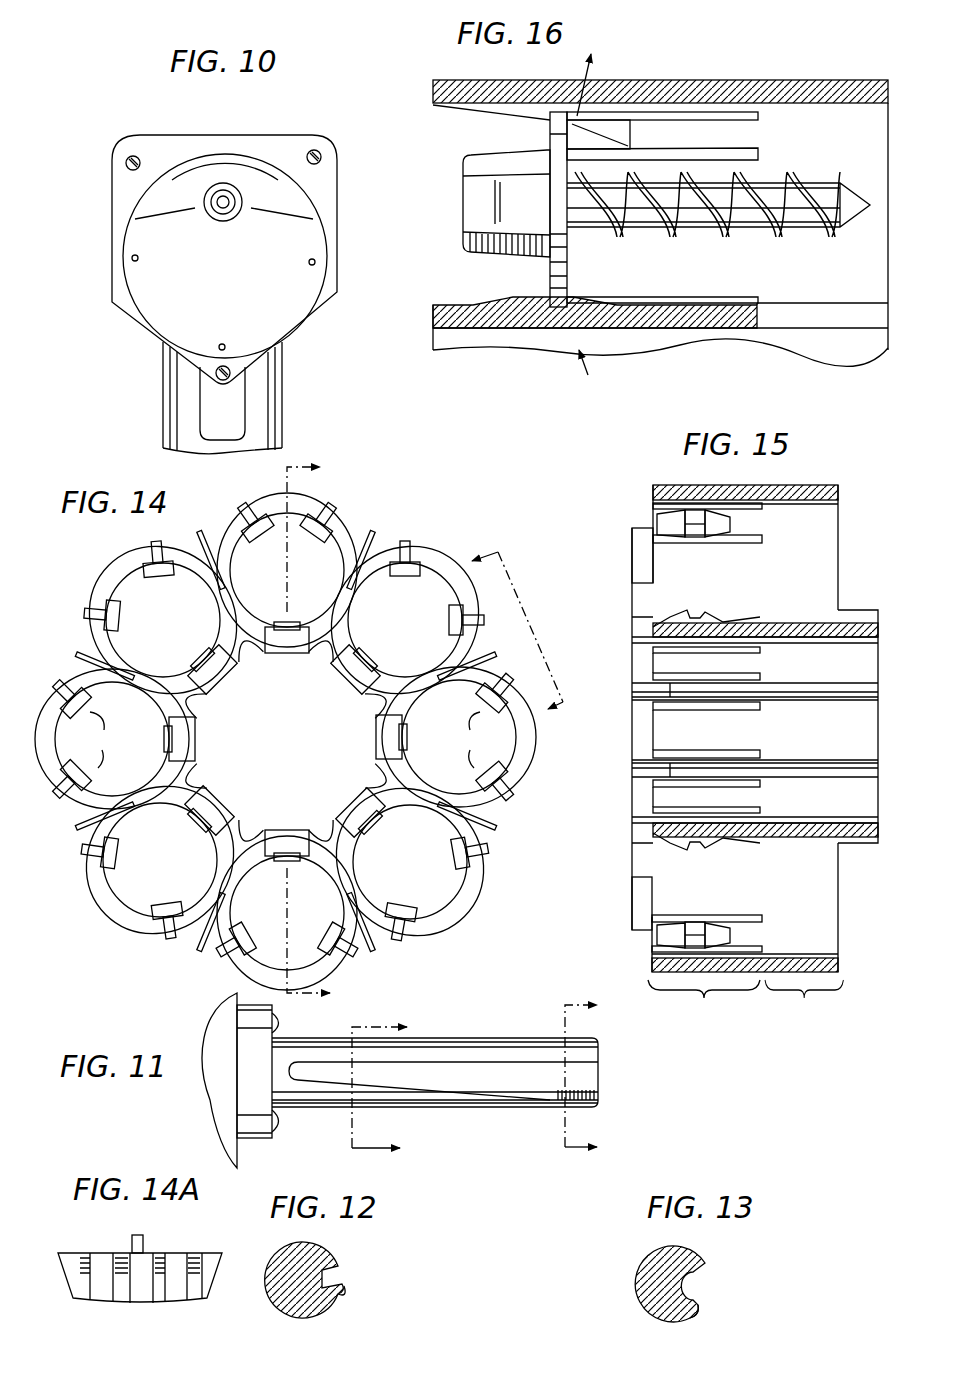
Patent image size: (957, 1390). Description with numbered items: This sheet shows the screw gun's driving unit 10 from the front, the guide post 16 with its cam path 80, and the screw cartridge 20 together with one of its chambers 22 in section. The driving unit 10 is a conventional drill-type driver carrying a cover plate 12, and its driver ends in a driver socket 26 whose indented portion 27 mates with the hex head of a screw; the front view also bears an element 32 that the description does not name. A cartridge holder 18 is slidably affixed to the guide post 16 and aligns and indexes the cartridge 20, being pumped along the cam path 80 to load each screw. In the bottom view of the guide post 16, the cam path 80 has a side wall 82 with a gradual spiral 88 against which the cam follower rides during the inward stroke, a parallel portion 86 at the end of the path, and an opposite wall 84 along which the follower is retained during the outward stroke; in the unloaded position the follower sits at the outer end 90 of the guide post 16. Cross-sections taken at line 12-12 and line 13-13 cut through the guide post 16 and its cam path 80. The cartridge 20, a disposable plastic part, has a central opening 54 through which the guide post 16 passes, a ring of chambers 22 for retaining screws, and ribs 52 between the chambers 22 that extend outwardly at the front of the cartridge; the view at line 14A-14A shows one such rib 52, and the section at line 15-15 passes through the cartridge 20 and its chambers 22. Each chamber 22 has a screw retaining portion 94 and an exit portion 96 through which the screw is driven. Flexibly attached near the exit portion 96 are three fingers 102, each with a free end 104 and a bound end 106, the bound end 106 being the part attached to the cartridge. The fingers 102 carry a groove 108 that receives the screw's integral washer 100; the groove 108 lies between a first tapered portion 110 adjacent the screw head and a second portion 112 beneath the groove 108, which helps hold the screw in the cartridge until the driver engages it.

In FIG. 10, the driving unit 10 is at (112, 178).
In FIG. 10, the cartridge holder 18 is at (127, 300).
In FIG. 10, the driver socket 26 is at (233, 187).
In FIG. 10, the mounting flange 32 is at (157, 335).
In FIG. 16, the free end 104 is at (458, 79).
In FIG. 16, the second portion 112 is at (610, 138).
In FIG. 15, the second portion 112 is at (717, 932).
In FIG. 16, the fingers 102 is at (688, 81).
In FIG. 14, the fingers 102 is at (161, 737).
In FIG. 15, the fingers 102 is at (745, 522).
In FIG. 16, the bound end 106 is at (779, 77).
In FIG. 15, the bound end 106 is at (812, 483).
In FIG. 16, the indented portion 27 is at (465, 218).
In FIG. 16, the first tapered portion 110 is at (497, 300).
In FIG. 15, the first tapered portion 110 is at (670, 522).
In FIG. 16, the integral washer 100 is at (569, 271).
In FIG. 16, the groove 108 is at (559, 305).
In FIG. 15, the groove 108 is at (693, 503).
In FIG. 16, the screw retaining portion 94 is at (517, 391).
In FIG. 15, the screw retaining portion 94 is at (704, 1006).
In FIG. 14, the cartridge 20 is at (68, 583).
In FIG. 14A, the cartridge 20 is at (87, 1250).
In FIG. 14, the ribs 52 is at (363, 537).
In FIG. 15, the ribs 52 is at (632, 562).
In FIG. 14A, the ribs 52 is at (145, 1240).
In FIG. 14, the opening 54 is at (306, 752).
In FIG. 15, the opening 54 is at (880, 800).
In FIG. 14, the chambers 22 is at (118, 893).
In FIG. 15, the chambers 22 is at (842, 553).
In FIG. 14, the section line 15- 15 is at (337, 731).
In FIG. 14, the section line 14A- 14A is at (527, 635).
In FIG. 15, the exit portion 96 is at (804, 1006).
In FIG. 11, the cover plate 12 is at (222, 1100).
In FIG. 11, the guide post 16 is at (303, 1108).
In FIG. 12, the guide post 16 is at (277, 1310).
In FIG. 13, the guide post 16 is at (638, 1258).
In FIG. 11, the wall 84 is at (497, 1062).
In FIG. 12, the wall 84 is at (342, 1272).
In FIG. 13, the wall 84 is at (710, 1277).
In FIG. 11, the outer end 90 is at (603, 1075).
In FIG. 11, the cam path 80 is at (447, 1075).
In FIG. 11, the side wall 82 is at (548, 1092).
In FIG. 12, the side wall 82 is at (340, 1285).
In FIG. 13, the side wall 82 is at (703, 1310).
In FIG. 11, the section line 13- 13 is at (604, 1076).
In FIG. 12, the parallel portion 86 is at (365, 1290).
In FIG. 13, the gradual spiral 88 is at (702, 1295).